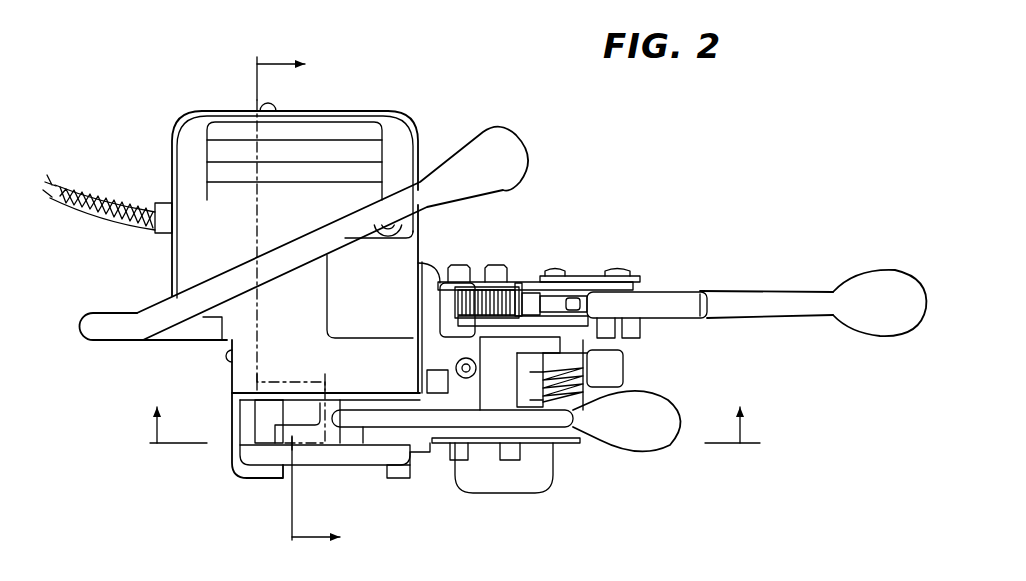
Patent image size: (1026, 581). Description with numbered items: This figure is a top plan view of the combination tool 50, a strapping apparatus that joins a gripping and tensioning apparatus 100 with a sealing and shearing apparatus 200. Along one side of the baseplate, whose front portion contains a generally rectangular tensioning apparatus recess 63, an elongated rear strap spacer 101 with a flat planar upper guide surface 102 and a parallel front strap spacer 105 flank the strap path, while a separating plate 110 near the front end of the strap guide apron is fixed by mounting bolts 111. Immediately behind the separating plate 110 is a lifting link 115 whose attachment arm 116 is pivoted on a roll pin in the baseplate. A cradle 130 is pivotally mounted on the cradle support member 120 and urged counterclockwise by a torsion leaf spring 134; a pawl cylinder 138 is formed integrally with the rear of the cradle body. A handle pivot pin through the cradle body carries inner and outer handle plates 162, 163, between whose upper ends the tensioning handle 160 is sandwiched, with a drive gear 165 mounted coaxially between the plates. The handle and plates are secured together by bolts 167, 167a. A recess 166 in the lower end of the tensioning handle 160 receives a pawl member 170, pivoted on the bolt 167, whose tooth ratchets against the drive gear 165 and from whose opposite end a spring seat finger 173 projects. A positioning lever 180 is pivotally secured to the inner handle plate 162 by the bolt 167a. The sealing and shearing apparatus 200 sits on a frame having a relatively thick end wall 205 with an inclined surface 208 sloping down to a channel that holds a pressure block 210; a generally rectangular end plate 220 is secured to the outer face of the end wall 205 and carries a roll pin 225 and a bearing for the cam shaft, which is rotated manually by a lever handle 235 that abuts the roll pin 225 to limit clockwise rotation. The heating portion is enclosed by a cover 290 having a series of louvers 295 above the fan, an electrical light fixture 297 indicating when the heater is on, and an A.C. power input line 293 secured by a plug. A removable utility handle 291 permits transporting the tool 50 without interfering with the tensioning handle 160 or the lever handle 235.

The combination tool 50 is at (544, 98).
The sealing and shearing apparatus 200 is at (432, 88).
The cover 290 is at (190, 137).
The utility handle 291 is at (298, 244).
The A.C. power input line 293 is at (90, 200).
The louvers 295 is at (322, 162).
The electrical light fixture 297 is at (398, 228).
The tensioning apparatus recess 63 is at (432, 277).
The gripping and tensioning apparatus 100 is at (627, 262).
The cradle 130 is at (508, 287).
The pawl cylinder 138 is at (448, 310).
The tensioning handle 160 is at (801, 302).
The inner handle plate 162 is at (470, 325).
The outer handle plate 163 is at (507, 290).
The drive gear 165 is at (460, 297).
The recess 166 is at (573, 303).
The bolt 167 is at (566, 270).
The bolt 167a is at (628, 278).
The pawl member 170 is at (524, 300).
The spring seat finger 173 is at (578, 308).
The positioning lever 180 is at (678, 305).
The cradle support member 120 is at (600, 370).
The torsion leaf spring 134 is at (543, 392).
The mounting bolts 111 is at (476, 378).
The attachment arm 116 is at (432, 380).
The lifting link 115 is at (440, 396).
The upper guide surface 102 is at (243, 468).
The rear strap spacer 101 is at (267, 480).
The end plate 220 is at (343, 452).
The end wall 205 is at (255, 405).
The inclined surface 208 is at (267, 413).
The pressure block 210 is at (302, 410).
The lever handle 235 is at (565, 426).
The separating plate 110 is at (518, 478).
The roll pin 225 is at (378, 440).
The front strap spacer 105 is at (398, 478).